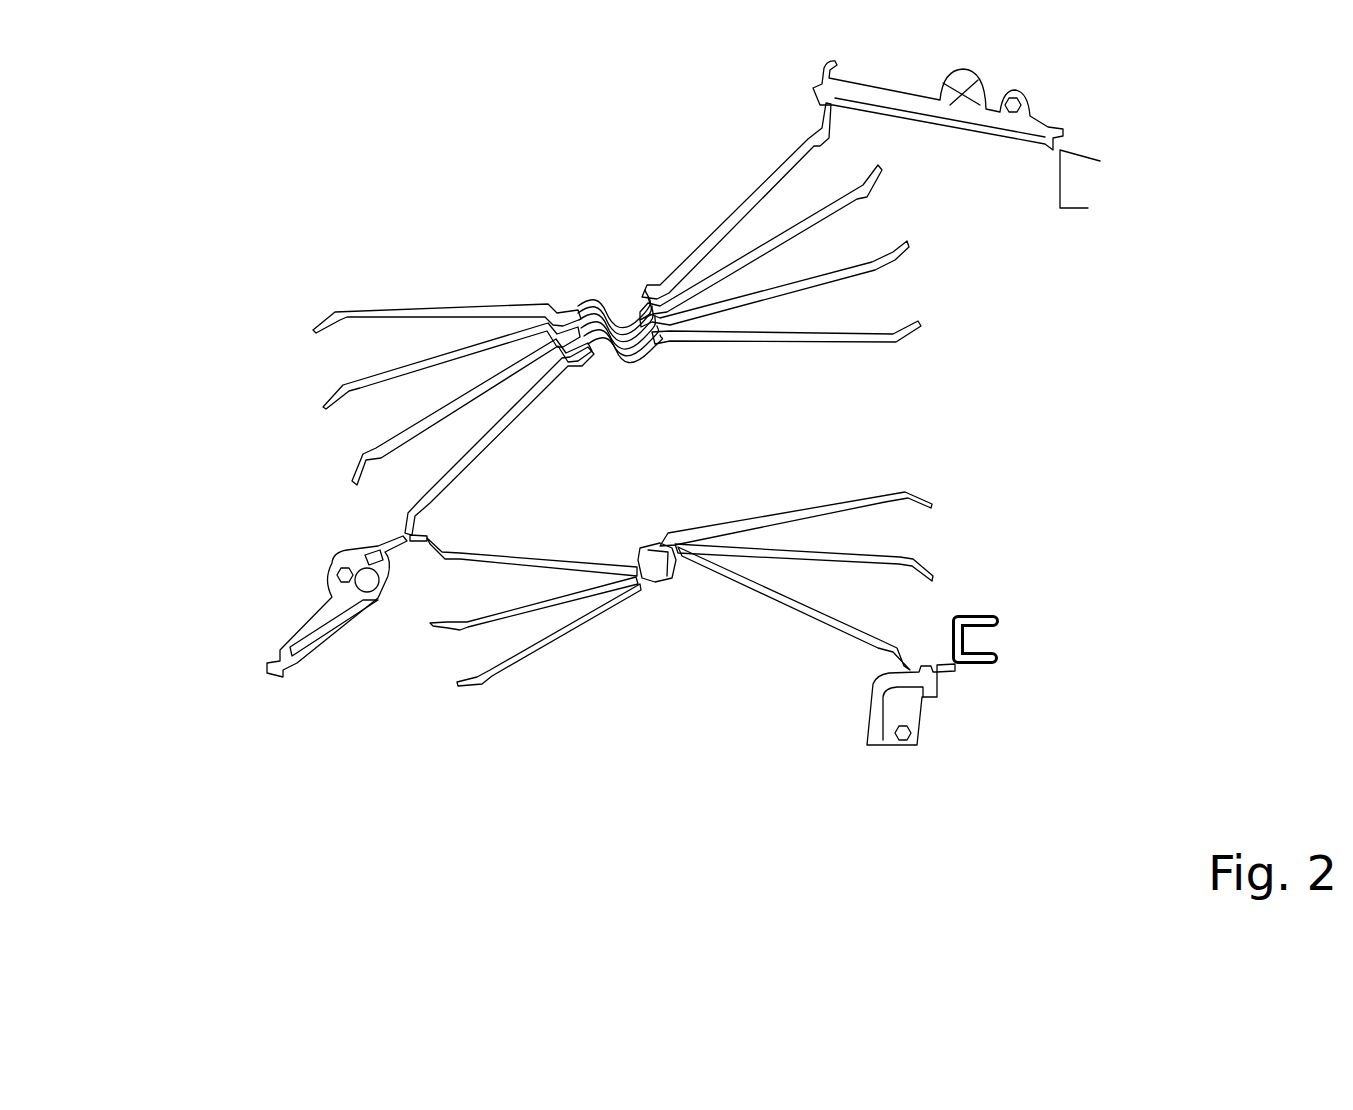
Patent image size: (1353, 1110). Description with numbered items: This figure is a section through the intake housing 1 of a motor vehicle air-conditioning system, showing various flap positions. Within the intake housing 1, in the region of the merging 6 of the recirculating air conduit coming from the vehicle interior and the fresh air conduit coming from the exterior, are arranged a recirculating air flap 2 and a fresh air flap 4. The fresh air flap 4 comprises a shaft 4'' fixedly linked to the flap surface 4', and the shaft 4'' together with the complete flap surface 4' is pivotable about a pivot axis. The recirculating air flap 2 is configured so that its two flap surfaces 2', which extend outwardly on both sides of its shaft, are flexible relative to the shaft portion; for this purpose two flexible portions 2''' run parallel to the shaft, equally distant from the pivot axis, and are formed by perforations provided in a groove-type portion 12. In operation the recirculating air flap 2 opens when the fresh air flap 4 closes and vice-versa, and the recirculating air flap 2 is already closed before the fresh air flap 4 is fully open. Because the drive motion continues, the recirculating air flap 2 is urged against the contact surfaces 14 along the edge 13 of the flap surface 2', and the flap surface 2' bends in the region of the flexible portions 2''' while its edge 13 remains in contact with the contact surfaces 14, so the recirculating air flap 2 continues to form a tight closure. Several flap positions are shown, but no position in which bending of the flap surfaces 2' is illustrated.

The intake housing 1 is at (333, 575).
The recirculating air flap 2 is at (602, 280).
The flap surface 2' is at (407, 217).
The flexible portion 2''' is at (609, 291).
The fresh air flap 4 is at (535, 658).
The flap surface 4' is at (835, 649).
The shaft 4'' is at (785, 596).
The merging 6 is at (580, 498).
The groove-type portion 12 is at (656, 352).
The edge 13 is at (916, 333).
The contact surface 14 is at (838, 100).